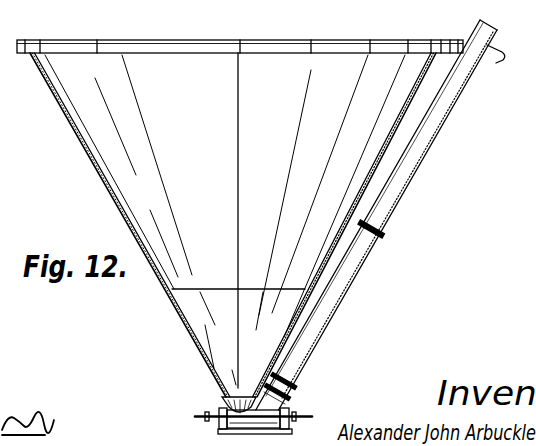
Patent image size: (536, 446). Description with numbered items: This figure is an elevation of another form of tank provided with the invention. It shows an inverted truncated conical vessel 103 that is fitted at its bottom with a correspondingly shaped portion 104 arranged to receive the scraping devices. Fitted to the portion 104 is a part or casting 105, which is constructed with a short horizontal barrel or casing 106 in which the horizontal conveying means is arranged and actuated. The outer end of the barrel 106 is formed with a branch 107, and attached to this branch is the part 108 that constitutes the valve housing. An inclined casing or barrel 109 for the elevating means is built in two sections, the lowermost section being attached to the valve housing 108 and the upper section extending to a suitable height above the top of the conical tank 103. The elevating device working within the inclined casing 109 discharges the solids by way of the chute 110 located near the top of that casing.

The inverted truncated conical vessel 103 is at (233, 225).
The correspondingly shaped portion 104 is at (238, 337).
The part or casting 105 is at (226, 404).
The horizontal barrel or casing 106 is at (257, 430).
The branch 107 is at (291, 403).
The valve housing 108 is at (297, 390).
The casing or barrel for the elevating means 109 is at (384, 236).
The chute 110 is at (496, 64).